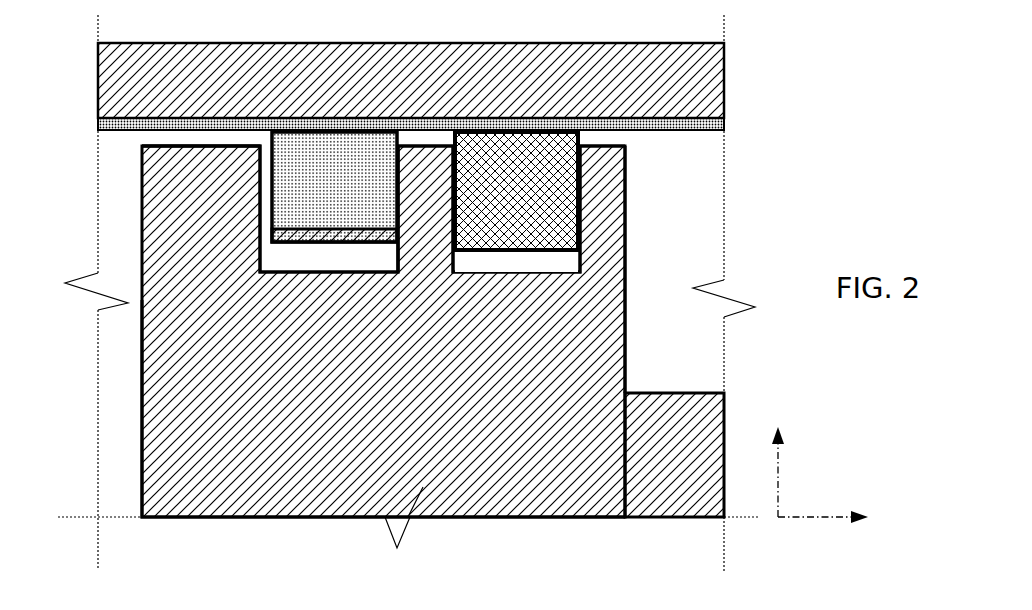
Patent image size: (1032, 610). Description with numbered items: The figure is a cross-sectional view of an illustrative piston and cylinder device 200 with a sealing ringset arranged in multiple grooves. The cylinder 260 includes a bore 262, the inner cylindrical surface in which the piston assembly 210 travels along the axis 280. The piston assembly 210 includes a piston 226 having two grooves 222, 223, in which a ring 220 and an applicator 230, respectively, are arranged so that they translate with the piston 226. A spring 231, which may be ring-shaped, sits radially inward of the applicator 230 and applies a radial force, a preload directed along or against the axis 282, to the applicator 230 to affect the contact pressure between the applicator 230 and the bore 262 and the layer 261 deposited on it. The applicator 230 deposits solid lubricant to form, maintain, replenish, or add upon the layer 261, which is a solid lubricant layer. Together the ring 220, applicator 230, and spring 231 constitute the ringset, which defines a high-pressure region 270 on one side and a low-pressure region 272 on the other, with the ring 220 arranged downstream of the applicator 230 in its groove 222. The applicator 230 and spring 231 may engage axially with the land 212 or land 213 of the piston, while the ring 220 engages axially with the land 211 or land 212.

The piston and cylinder device 200 is at (447, 23).
The piston assembly 210 is at (126, 234).
The land 211 is at (627, 207).
The land 212 is at (413, 223).
The land 213 is at (240, 193).
The ring 220 is at (496, 196).
The groove 222 is at (507, 274).
The groove 223 is at (398, 272).
The piston 226 is at (184, 404).
The applicator 230 is at (314, 192).
The spring 231 is at (333, 245).
The cylinder 260 is at (163, 92).
The layer 261 is at (725, 125).
The bore 262 is at (707, 132).
The high-pressure region 270 is at (103, 410).
The low-pressure region 272 is at (692, 371).
The axis 280 is at (849, 513).
The axis 282 is at (777, 456).